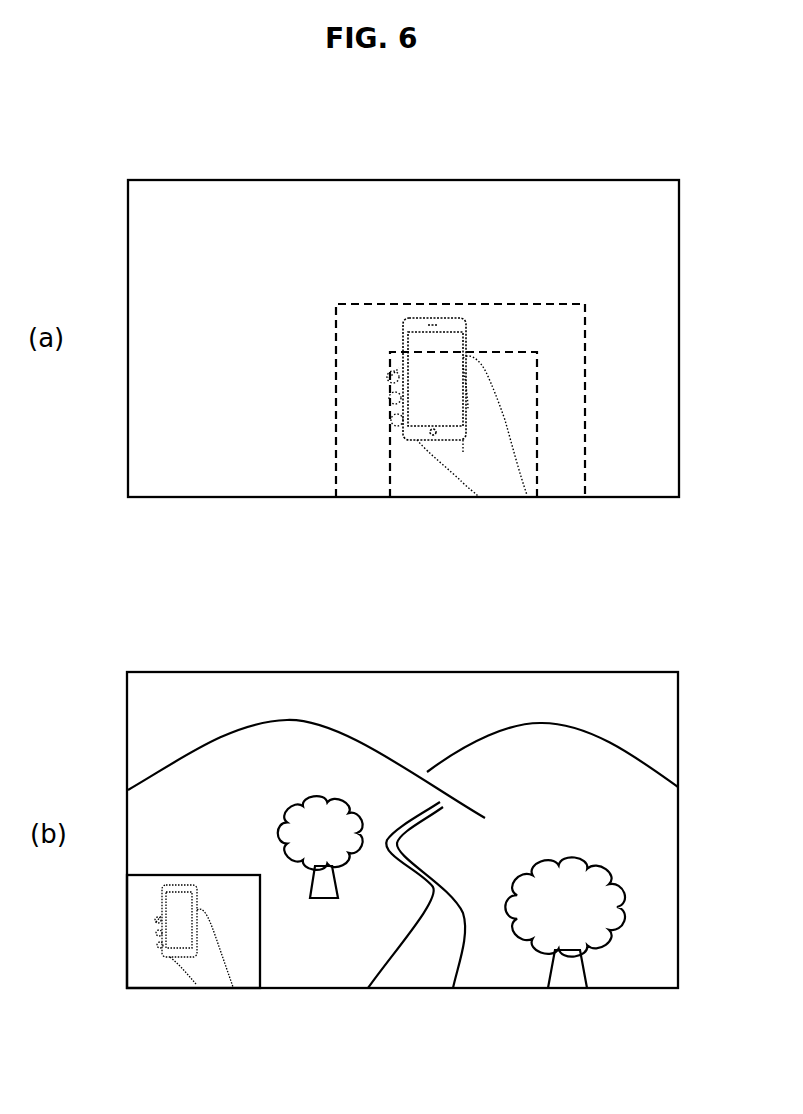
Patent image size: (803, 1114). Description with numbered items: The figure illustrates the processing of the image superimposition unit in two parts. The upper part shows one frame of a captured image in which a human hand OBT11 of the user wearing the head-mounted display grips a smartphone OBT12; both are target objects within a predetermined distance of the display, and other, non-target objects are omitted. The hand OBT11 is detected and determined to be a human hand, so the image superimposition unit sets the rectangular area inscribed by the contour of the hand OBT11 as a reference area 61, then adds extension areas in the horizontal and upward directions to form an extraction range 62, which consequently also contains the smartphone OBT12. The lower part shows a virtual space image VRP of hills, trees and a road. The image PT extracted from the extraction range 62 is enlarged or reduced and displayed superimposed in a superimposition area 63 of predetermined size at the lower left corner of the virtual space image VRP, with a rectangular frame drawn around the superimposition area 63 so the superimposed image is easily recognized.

The smartphone OBT12 is at (435, 320).
The human hand OBT11 is at (483, 473).
The extraction range 62 is at (585, 350).
The reference area 61 is at (540, 417).
The virtual space image VRP is at (385, 695).
The image PT is at (157, 970).
The superimposition area 63 is at (262, 955).